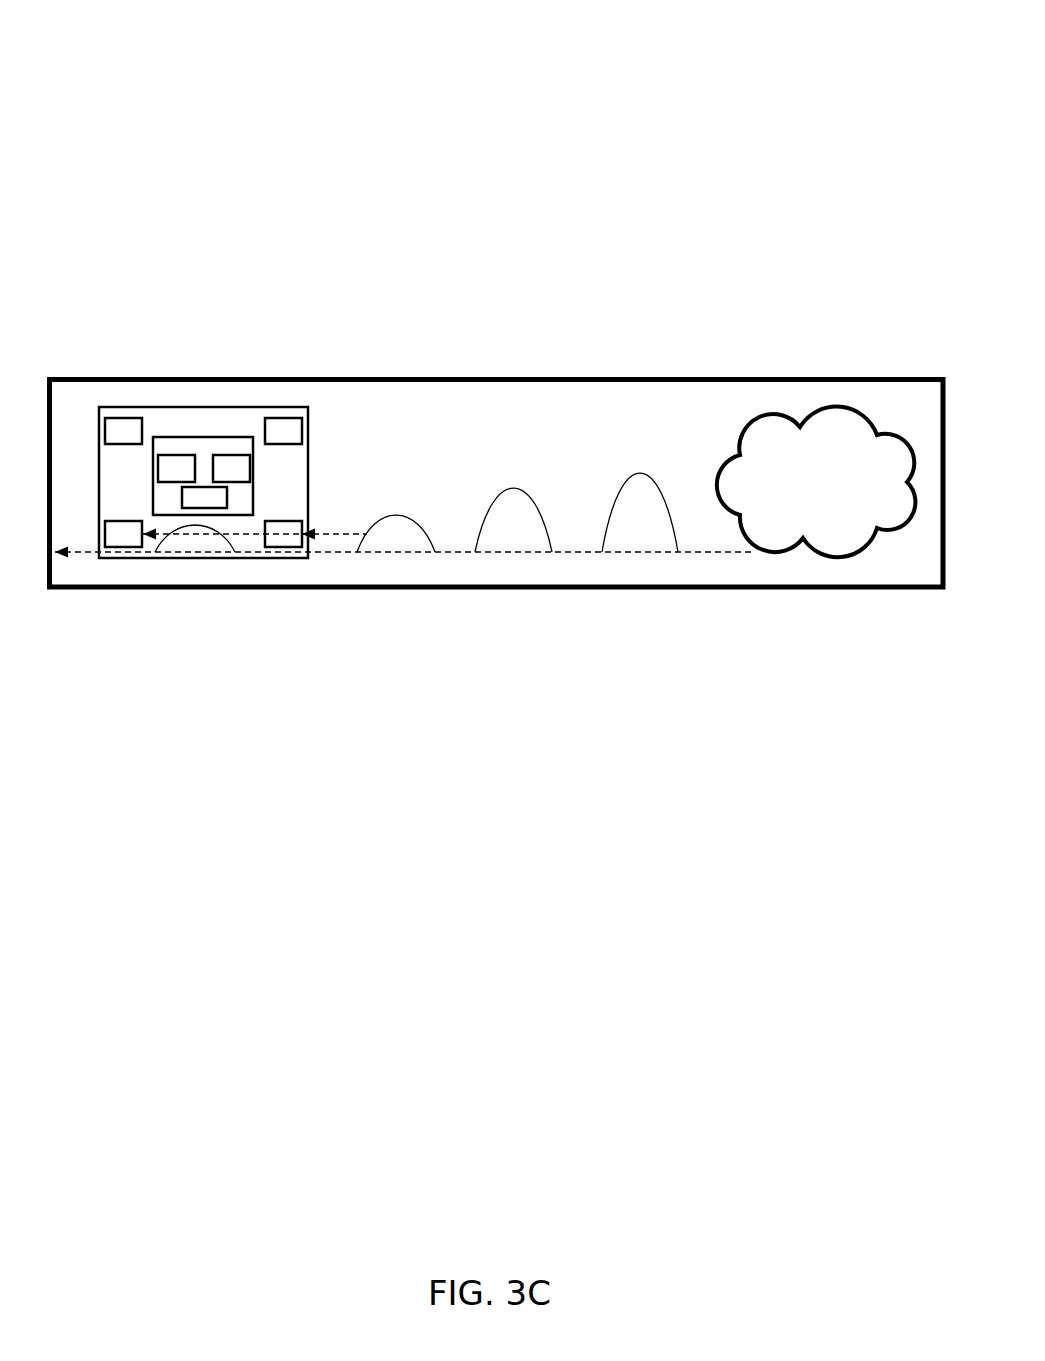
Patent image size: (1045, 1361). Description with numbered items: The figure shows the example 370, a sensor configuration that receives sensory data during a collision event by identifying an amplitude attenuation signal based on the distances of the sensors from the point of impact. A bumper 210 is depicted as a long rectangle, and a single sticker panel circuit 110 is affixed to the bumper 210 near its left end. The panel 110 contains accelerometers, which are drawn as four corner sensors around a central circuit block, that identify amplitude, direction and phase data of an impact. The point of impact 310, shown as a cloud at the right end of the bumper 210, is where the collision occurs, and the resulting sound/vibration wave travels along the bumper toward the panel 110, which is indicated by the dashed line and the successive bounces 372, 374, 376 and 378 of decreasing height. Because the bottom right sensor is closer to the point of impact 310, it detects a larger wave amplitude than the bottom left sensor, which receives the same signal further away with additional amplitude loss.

The example 370 is at (77, 37).
The bumper 210 is at (344, 402).
The sticker panel circuit 110 is at (98, 560).
The fourth bounce 378 is at (182, 540).
The third bounce 376 is at (380, 538).
The second bounce 374 is at (497, 538).
The first bounce 372 is at (625, 538).
The point of impact 310 is at (816, 482).